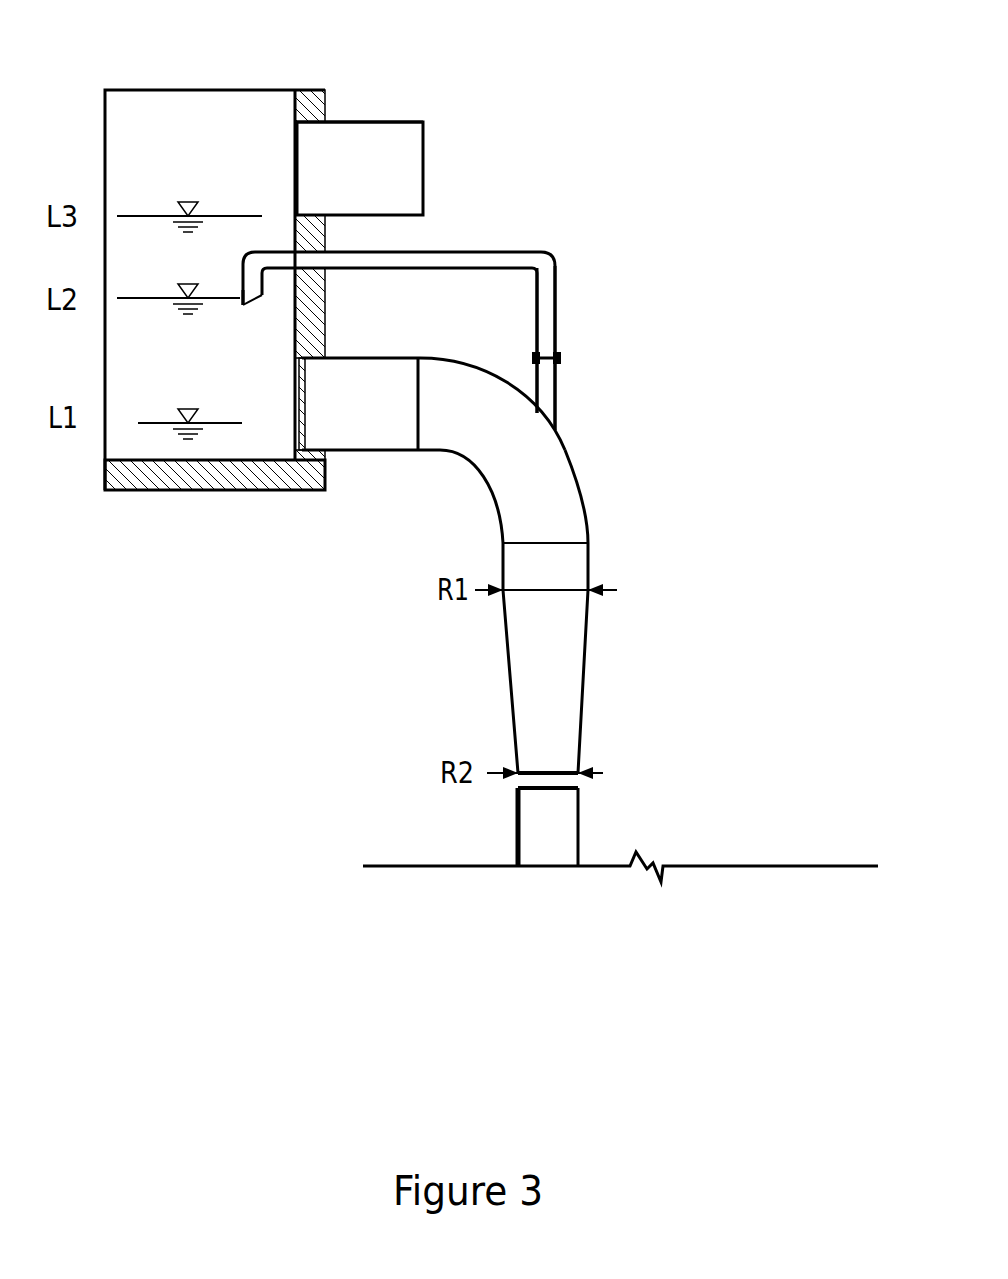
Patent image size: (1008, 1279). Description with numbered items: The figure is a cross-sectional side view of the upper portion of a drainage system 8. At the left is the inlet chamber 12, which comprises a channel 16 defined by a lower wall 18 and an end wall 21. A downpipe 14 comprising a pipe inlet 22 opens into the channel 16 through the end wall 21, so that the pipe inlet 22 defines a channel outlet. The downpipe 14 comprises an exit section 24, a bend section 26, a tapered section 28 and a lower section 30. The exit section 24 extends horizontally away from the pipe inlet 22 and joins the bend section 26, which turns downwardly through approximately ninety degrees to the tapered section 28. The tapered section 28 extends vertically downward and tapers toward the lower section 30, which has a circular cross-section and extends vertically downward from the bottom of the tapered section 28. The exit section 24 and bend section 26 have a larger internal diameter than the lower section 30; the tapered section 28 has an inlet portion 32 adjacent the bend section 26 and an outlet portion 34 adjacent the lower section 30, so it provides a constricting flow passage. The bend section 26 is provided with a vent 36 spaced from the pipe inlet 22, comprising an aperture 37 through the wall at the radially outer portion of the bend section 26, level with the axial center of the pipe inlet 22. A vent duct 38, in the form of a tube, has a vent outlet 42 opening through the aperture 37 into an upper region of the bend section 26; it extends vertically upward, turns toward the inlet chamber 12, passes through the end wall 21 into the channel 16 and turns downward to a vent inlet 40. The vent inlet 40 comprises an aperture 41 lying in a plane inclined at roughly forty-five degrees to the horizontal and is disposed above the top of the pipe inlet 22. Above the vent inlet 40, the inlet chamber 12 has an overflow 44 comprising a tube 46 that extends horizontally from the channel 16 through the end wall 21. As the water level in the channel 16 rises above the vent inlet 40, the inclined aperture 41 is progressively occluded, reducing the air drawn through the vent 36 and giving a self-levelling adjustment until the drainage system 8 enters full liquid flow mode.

The drainage system 8 is at (616, 188).
The inlet chamber 12 is at (196, 106).
The downpipe 14 is at (592, 490).
The channel 16 is at (253, 168).
The lower wall 18 is at (140, 472).
The end wall 21 is at (315, 90).
The pipe inlet 22 is at (297, 418).
The exit section 24 is at (345, 430).
The bend section 26 is at (470, 450).
The tapered section 28 is at (563, 660).
The lower section 30 is at (562, 818).
The inlet portion 32 is at (588, 590).
The outlet portion 34 is at (563, 770).
The vent 36 is at (570, 430).
The aperture 37 is at (545, 420).
The vent duct 38 is at (458, 252).
The vent inlet 40 is at (250, 306).
The aperture 41 is at (248, 300).
The vent outlet 42 is at (545, 422).
The overflow 44 is at (412, 143).
The tube 46 is at (360, 122).